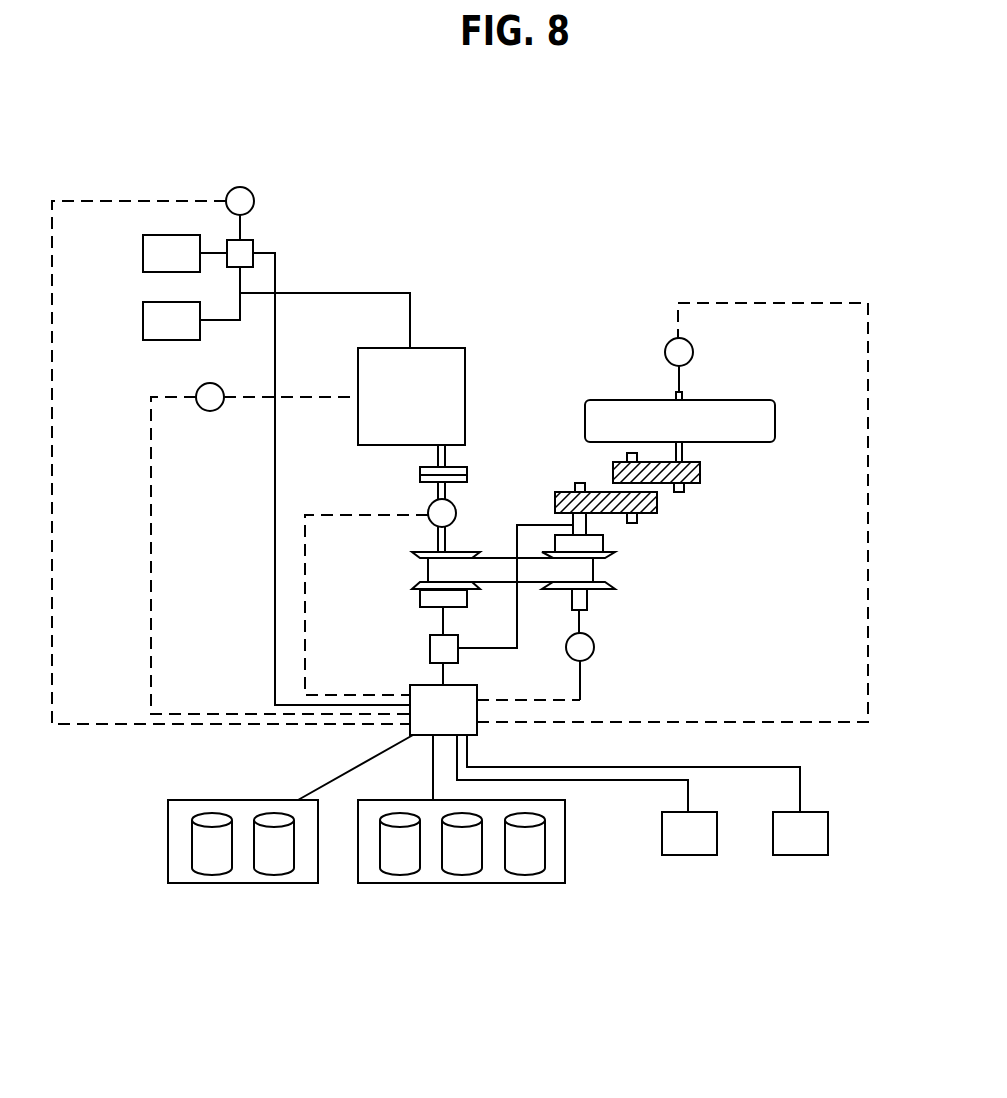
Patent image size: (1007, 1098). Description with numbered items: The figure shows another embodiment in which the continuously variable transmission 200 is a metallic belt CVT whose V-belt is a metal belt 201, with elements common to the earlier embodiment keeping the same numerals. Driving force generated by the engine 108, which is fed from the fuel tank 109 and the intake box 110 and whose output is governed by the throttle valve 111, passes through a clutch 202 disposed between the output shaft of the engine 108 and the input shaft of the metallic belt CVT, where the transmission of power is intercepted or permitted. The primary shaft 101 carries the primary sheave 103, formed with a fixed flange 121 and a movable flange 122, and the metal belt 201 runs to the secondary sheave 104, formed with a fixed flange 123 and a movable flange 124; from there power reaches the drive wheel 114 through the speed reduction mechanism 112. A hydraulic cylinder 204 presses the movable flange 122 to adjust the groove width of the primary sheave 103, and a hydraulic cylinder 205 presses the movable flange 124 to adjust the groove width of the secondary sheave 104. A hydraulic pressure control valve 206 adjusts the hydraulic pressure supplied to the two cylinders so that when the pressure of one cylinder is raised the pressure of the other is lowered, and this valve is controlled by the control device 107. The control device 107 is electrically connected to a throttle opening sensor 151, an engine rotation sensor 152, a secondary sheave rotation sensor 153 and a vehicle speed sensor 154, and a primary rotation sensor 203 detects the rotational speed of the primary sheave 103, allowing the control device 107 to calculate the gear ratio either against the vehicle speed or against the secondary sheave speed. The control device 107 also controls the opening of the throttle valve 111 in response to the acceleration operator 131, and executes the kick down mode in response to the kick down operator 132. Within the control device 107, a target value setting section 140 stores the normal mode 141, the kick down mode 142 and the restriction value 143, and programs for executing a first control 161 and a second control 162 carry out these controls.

The primary shaft 101 is at (448, 537).
The primary sheave 103 is at (447, 519).
The secondary sheave 104 is at (642, 579).
The control device 107 is at (478, 736).
The engine 108 is at (446, 348).
The fuel tank 109 is at (143, 253).
The intake box 110 is at (143, 320).
The throttle valve 111 is at (253, 245).
The speed reduction mechanism 112 is at (722, 495).
The drive wheel 114 is at (750, 400).
The fixed flange 121 is at (412, 553).
The movable flange 122 is at (412, 587).
The fixed flange 123 is at (615, 588).
The movable flange 124 is at (615, 554).
The acceleration operator 131 is at (690, 848).
The kick down operator 132 is at (796, 848).
The target value setting section 140 is at (476, 871).
The normal mode 141 is at (393, 868).
The kick down mode 142 is at (455, 868).
The restriction value 143 is at (518, 868).
The throttle opening sensor 151 is at (253, 192).
The engine rotation sensor 152 is at (197, 390).
The secondary sheave rotation sensor 153 is at (594, 652).
The vehicle speed sensor 154 is at (666, 345).
The first control 161 is at (205, 868).
The second control 162 is at (267, 868).
The continuously variable transmission 200 is at (630, 613).
The metal belt 201 is at (495, 570).
The clutch 202 is at (420, 474).
The primary rotation sensor 203 is at (428, 512).
The hydraulic cylinder 204 is at (420, 598).
The hydraulic cylinder 205 is at (605, 545).
The hydraulic pressure control valve 206 is at (430, 650).